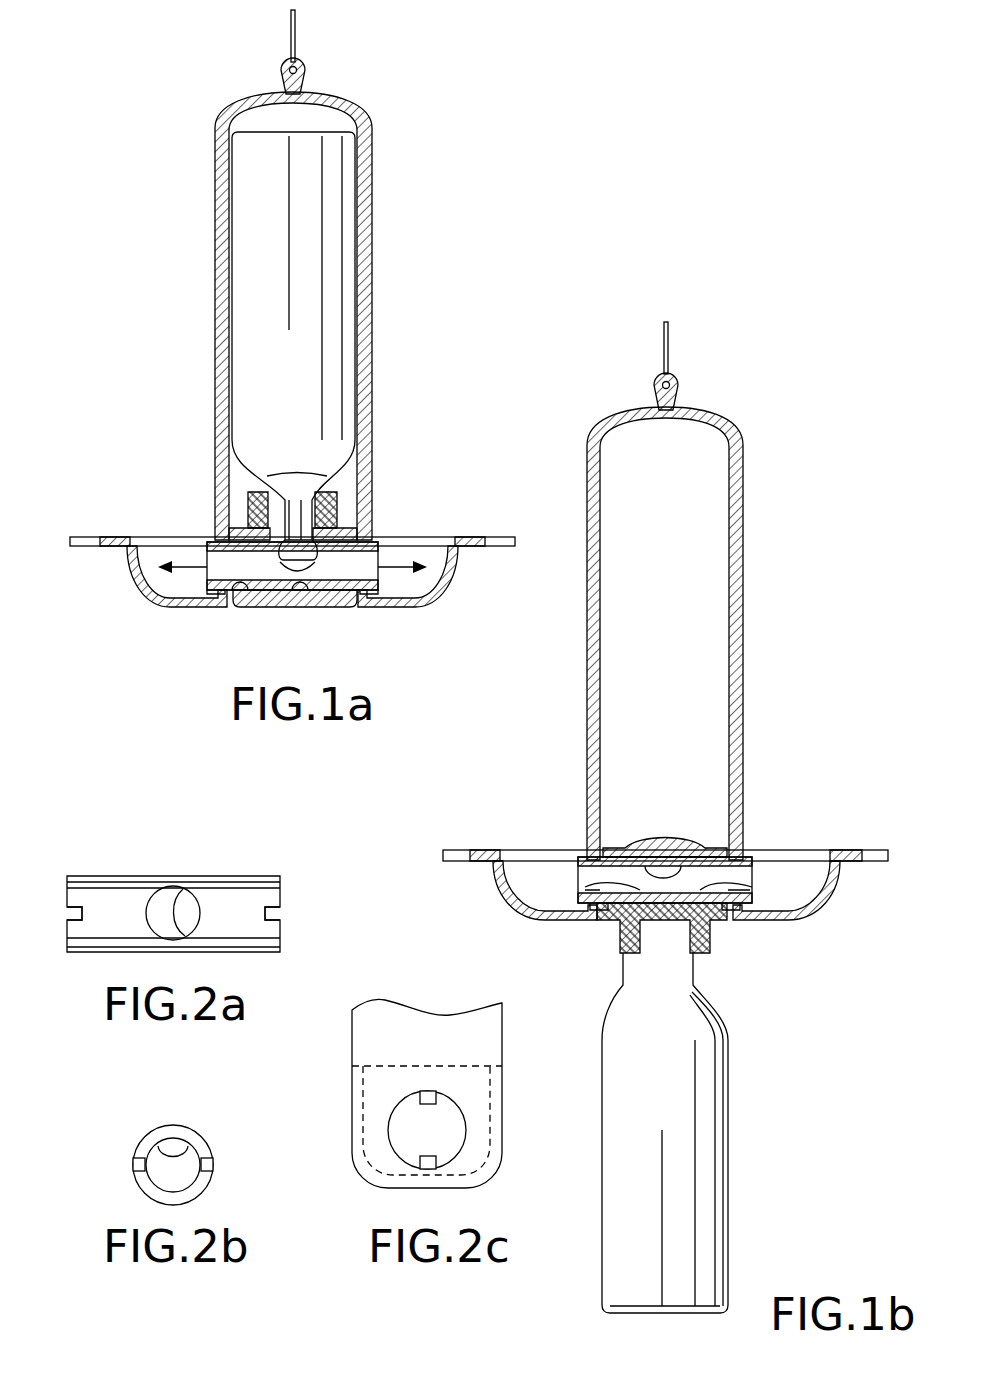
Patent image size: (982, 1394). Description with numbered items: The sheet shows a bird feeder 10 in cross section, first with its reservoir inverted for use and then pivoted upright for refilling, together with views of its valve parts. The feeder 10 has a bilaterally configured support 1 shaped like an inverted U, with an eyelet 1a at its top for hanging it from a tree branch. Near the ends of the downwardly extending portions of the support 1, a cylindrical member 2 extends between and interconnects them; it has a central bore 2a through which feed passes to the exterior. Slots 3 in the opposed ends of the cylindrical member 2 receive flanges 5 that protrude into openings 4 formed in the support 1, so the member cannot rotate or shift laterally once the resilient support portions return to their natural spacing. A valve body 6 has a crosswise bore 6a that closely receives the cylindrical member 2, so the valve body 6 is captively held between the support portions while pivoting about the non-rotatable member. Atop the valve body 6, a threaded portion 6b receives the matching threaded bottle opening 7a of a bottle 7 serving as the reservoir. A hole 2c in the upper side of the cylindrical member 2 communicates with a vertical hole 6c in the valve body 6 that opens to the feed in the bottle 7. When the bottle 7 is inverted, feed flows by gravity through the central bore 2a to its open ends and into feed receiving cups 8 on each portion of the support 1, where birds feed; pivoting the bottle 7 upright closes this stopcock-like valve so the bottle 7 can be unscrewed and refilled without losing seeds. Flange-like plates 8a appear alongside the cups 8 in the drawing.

In FIG. 1a, the support 1 is at (366, 110).
In FIG. 1b, the support 1 is at (743, 562).
In FIG. 1a, the eyelet 1a is at (303, 68).
In FIG. 1b, the eyelet 1a is at (680, 385).
In FIG. 1a, the cylindrical member 2 is at (348, 546).
In FIG. 1b, the cylindrical member 2 is at (725, 857).
In FIG. 2a, the cylindrical member 2 is at (140, 880).
In FIG. 2b, the cylindrical member 2 is at (173, 1132).
In FIG. 1a, the central bore 2a is at (240, 592).
In FIG. 1b, the central bore 2a is at (752, 888).
In FIG. 2b, the central bore 2a is at (185, 1150).
In FIG. 1a, the hole 2c is at (276, 598).
In FIG. 1b, the hole 2c is at (657, 848).
In FIG. 2a, the hole 2c is at (183, 912).
In FIG. 2a, the slots 3 is at (67, 912).
In FIG. 2b, the slots 3 is at (138, 1160).
In FIG. 1a, the openings 4 is at (208, 556).
In FIG. 1b, the openings 4 is at (580, 863).
In FIG. 2c, the openings 4 is at (410, 1133).
In FIG. 2c, the flanges 5 is at (436, 1100).
In FIG. 1a, the valve body 6 is at (336, 503).
In FIG. 1b, the valve body 6 is at (620, 915).
In FIG. 1a, the crosswise bore 6a is at (302, 608).
In FIG. 1b, the crosswise bore 6a is at (586, 888).
In FIG. 1a, the threaded portion 6b is at (249, 507).
In FIG. 1b, the threaded portion 6b is at (708, 940).
In FIG. 1a, the vertical hole 6c is at (290, 484).
In FIG. 1b, the vertical hole 6c is at (650, 940).
In FIG. 1a, the bottle 7 is at (314, 237).
In FIG. 1b, the bottle 7 is at (705, 1135).
In FIG. 1a, the threaded bottle opening 7a is at (324, 481).
In FIG. 1b, the threaded bottle opening 7a is at (627, 955).
In FIG. 1a, the feed receiving cups 8 is at (132, 575).
In FIG. 1b, the feed receiving cups 8 is at (500, 888).
In FIG. 1a, the flange 8a is at (76, 537).
In FIG. 1b, the flange 8a is at (470, 850).
In FIG. 1a, the feeder 10 is at (395, 333).
In FIG. 1b, the feeder 10 is at (788, 475).